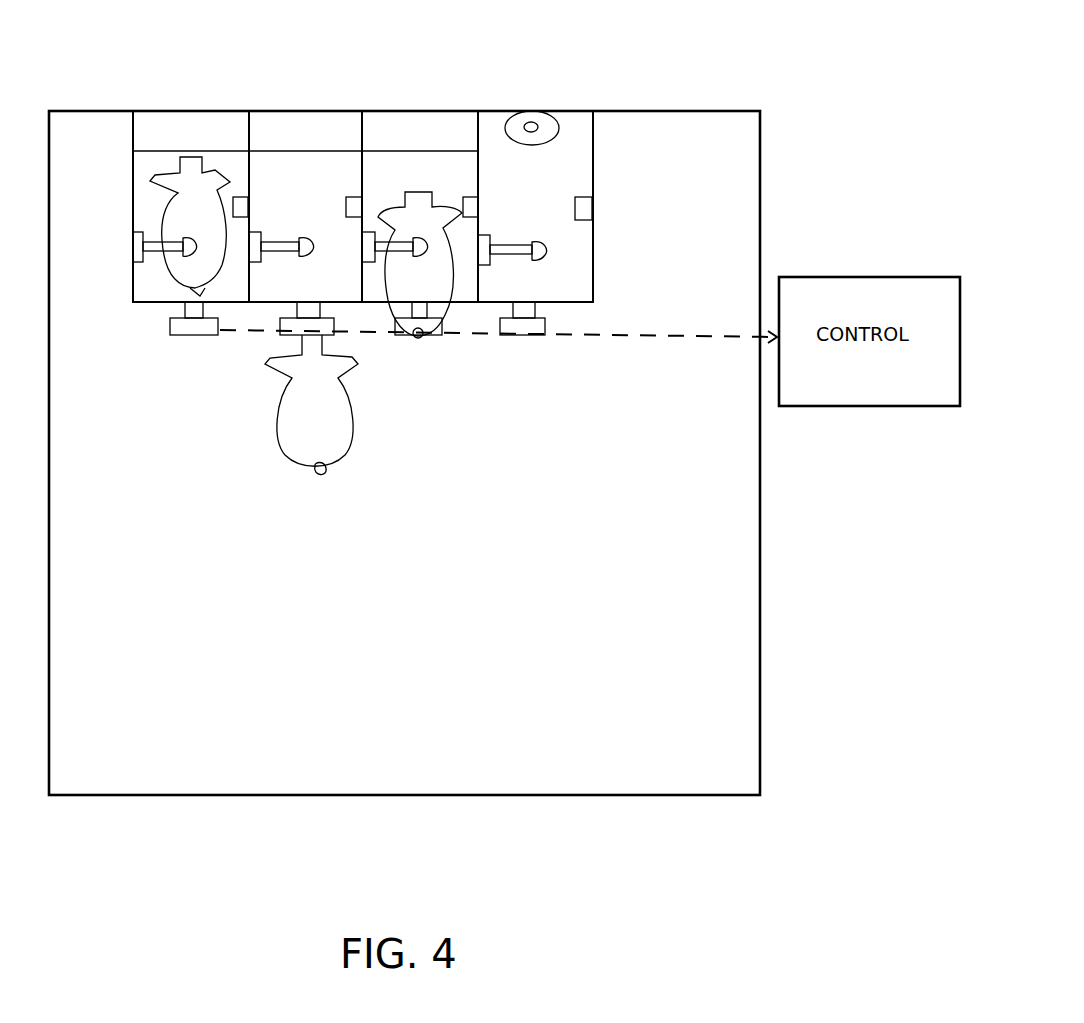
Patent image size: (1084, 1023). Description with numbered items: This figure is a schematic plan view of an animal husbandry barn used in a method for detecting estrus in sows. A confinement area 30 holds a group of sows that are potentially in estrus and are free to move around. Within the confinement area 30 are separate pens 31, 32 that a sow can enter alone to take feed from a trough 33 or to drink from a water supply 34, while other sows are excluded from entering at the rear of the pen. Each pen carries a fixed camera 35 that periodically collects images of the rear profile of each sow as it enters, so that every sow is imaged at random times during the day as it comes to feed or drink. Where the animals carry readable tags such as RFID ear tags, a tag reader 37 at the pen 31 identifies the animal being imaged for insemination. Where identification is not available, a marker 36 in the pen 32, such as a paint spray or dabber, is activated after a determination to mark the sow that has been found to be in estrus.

The confinement area 30 is at (760, 592).
The pen 31 is at (128, 165).
The pen 32 is at (595, 152).
The trough 33 is at (314, 135).
The water supply 34 is at (541, 118).
The camera 35 is at (188, 332).
The marker 36 is at (508, 264).
The tag reader 37 is at (582, 204).